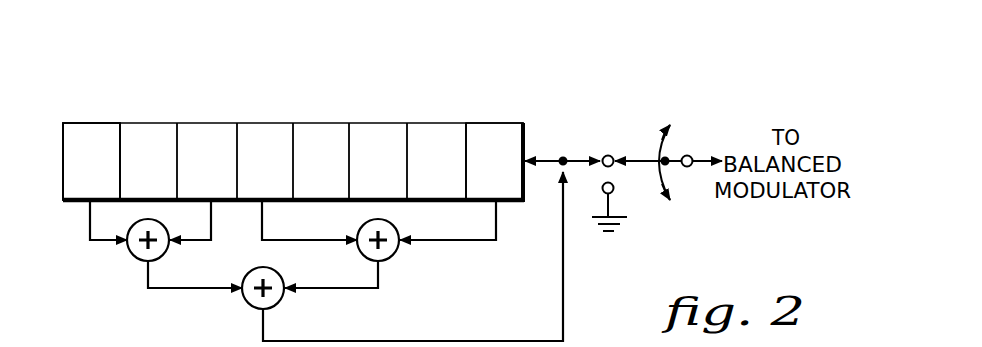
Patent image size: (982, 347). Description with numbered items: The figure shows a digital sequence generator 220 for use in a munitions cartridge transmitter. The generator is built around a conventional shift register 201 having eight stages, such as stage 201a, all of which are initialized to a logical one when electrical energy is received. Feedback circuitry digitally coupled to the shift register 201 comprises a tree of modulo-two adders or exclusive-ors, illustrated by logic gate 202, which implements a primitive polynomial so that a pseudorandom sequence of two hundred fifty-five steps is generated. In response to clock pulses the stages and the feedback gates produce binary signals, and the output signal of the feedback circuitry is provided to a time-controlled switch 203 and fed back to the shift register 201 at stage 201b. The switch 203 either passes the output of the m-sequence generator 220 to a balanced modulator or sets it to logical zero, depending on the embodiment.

The shift register 201 is at (443, 123).
The stage 201a is at (100, 130).
The stage 201b is at (525, 130).
The logic gate 202 is at (128, 243).
The switch 203 is at (645, 157).
The digital sequence generator 220 is at (86, 110).